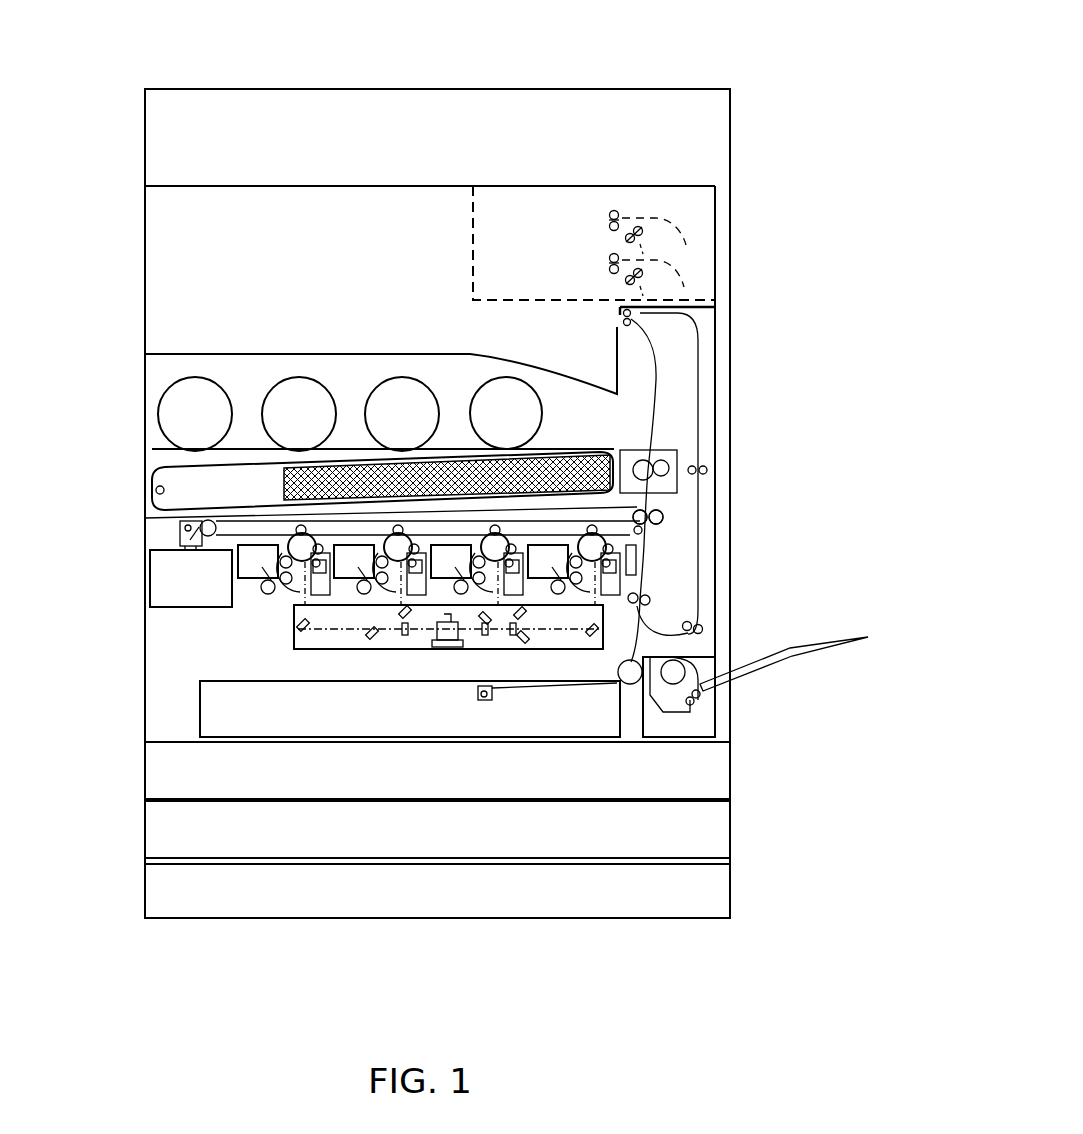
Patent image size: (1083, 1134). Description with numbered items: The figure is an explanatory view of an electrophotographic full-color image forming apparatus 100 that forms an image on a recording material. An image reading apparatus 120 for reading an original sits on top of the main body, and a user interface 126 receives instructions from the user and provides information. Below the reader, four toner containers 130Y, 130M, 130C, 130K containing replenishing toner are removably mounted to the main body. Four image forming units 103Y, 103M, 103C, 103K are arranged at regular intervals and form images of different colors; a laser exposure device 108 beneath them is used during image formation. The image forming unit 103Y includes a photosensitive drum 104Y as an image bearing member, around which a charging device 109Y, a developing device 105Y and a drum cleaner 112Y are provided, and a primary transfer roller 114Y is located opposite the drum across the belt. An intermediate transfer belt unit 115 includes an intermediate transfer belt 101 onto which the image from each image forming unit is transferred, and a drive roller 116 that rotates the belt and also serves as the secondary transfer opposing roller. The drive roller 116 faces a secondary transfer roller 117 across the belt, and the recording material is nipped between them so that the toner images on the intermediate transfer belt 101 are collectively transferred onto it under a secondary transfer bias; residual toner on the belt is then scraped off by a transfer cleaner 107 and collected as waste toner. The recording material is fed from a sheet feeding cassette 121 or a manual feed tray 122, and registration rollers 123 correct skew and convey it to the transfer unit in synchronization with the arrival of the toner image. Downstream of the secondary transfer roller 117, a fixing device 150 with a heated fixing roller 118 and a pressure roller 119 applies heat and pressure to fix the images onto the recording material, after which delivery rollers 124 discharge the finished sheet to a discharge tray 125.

The image forming apparatus 100 is at (661, 28).
The image reading apparatus 120 is at (704, 135).
The user interface 126 is at (697, 217).
The delivery rollers 124 is at (641, 309).
The discharge tray 125 is at (541, 365).
The toner container 130Y is at (174, 377).
The toner container 130M is at (283, 377).
The toner container 130C is at (387, 377).
The toner container 130K is at (489, 377).
The intermediate transfer belt unit 115 is at (314, 506).
The primary transfer roller 114Y is at (280, 510).
The transfer cleaner 107 is at (182, 531).
The photosensitive drum 104Y is at (262, 549).
The developing device 105Y is at (285, 562).
The charging device 109Y is at (304, 584).
The drum cleaner 112Y is at (302, 586).
The image forming unit 103Y is at (279, 632).
The image forming unit 103M is at (354, 601).
The image forming unit 103C is at (486, 601).
The image forming unit 103K is at (616, 610).
The laser exposure device 108 is at (312, 650).
The fixing roller 118 is at (650, 464).
The pressure roller 119 is at (668, 468).
The fixing device 150 is at (678, 488).
The intermediate transfer belt 101 is at (664, 521).
The secondary transfer roller 117 is at (656, 525).
The drive roller 116 is at (644, 527).
The registration rollers 123 is at (688, 636).
The manual feed tray 122 is at (770, 660).
The sheet feeding cassette 121 is at (609, 718).